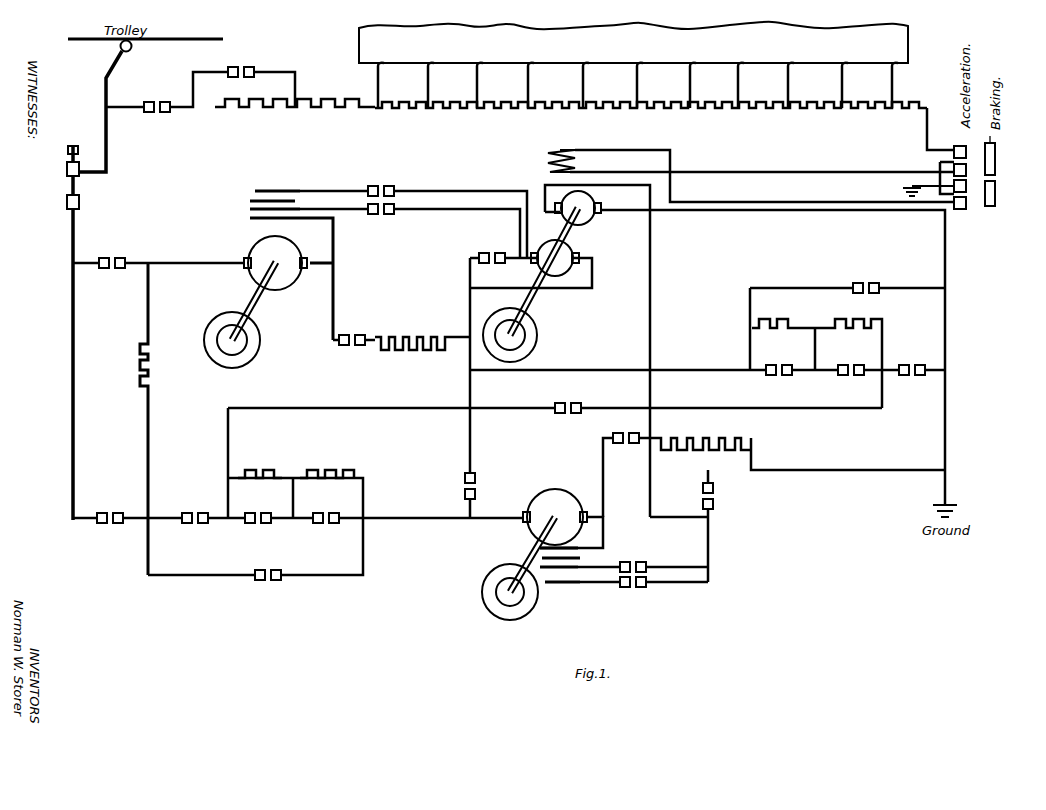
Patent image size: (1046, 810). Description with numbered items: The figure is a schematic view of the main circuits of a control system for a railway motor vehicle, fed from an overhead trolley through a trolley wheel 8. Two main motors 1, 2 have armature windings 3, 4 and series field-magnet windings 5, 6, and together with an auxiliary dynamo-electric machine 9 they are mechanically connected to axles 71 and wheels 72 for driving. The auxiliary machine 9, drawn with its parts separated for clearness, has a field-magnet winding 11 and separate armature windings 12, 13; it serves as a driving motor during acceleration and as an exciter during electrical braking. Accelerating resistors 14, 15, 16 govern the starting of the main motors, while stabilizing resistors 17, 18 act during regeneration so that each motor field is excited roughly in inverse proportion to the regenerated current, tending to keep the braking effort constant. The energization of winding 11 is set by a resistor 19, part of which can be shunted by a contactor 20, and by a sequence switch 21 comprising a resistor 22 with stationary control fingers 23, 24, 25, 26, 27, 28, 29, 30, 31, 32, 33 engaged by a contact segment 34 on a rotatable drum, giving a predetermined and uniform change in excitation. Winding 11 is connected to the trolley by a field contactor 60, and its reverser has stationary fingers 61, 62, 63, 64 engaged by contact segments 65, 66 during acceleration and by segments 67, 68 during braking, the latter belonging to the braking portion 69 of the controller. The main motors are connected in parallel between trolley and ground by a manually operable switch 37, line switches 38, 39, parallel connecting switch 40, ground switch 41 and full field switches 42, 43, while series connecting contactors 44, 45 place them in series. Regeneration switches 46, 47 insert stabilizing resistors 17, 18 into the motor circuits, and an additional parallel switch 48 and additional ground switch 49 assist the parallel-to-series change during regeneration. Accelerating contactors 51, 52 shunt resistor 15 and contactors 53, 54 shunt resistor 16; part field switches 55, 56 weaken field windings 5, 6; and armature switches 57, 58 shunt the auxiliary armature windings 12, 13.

The main motor 1 is at (217, 245).
The main motor 2 is at (509, 505).
The armature winding 3 is at (292, 250).
The armature winding 4 is at (563, 490).
The series field-magnet winding 5 is at (252, 200).
The series field-magnet winding 6 is at (548, 585).
The trolley wheel 8 is at (124, 54).
The auxiliary dynamo-electric machine 9 is at (610, 293).
The field-magnet winding 11 is at (570, 140).
The armature winding 12 is at (572, 250).
The armature winding 13 is at (590, 200).
The accelerating resistor 14 is at (152, 385).
The accelerating resistor 15 is at (798, 320).
The accelerating resistor 16 is at (311, 470).
The stabilizing resistor 17 is at (412, 332).
The stabilizing resistor 18 is at (708, 438).
The resistor 19 is at (262, 112).
The switch or contactor 20 is at (236, 68).
The auxiliary controller or sequence switch 21 is at (697, 136).
The resistor 22 is at (806, 106).
The control finger 23 is at (391, 85).
The control finger 24 is at (441, 85).
The control finger 25 is at (490, 85).
The control finger 26 is at (541, 85).
The control finger 27 is at (596, 85).
The control finger 28 is at (649, 85).
The control finger 29 is at (702, 85).
The control finger 30 is at (751, 85).
The control finger 31 is at (801, 85).
The control finger 32 is at (853, 85).
The control finger 33 is at (903, 85).
The contact segment 34 is at (647, 42).
The manually operable switch 37 is at (70, 187).
The line switch 38 is at (116, 258).
The line switch 39 is at (112, 512).
The parallel connecting switch 40 is at (192, 512).
The ground switch 41 is at (906, 363).
The full field switch 42 is at (380, 184).
The full field switch 43 is at (632, 590).
The series connecting switch 44 is at (476, 482).
The series connecting switch 45 is at (574, 402).
The regeneration switch 46 is at (348, 330).
The regeneration switch 47 is at (620, 446).
The additional parallel connecting switch 48 is at (272, 582).
The additional ground switch 49 is at (860, 282).
The accelerating contactor 51 is at (774, 378).
The accelerating contactor 52 is at (846, 378).
The accelerating contactor 53 is at (248, 524).
The accelerating contactor 54 is at (320, 524).
The part field switch 55 is at (388, 218).
The part field switch 56 is at (634, 562).
The armature switch 57 is at (500, 250).
The armature switch 58 is at (714, 502).
The field switch or contactor 60 is at (160, 100).
The control finger 61 is at (942, 129).
The control finger 62 is at (940, 166).
The control finger 63 is at (912, 184).
The control finger 64 is at (962, 211).
The contact segment 65 is at (970, 148).
The contact segment 66 is at (971, 170).
The contact segment 67 is at (996, 152).
The contact segment 68 is at (996, 195).
The braking controller 69 is at (1028, 175).
The axle 71 is at (255, 300).
The wheel 72 is at (258, 345).